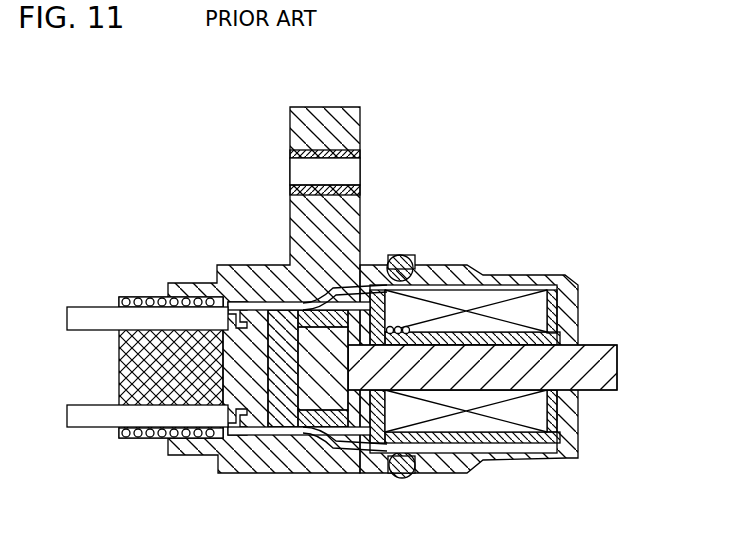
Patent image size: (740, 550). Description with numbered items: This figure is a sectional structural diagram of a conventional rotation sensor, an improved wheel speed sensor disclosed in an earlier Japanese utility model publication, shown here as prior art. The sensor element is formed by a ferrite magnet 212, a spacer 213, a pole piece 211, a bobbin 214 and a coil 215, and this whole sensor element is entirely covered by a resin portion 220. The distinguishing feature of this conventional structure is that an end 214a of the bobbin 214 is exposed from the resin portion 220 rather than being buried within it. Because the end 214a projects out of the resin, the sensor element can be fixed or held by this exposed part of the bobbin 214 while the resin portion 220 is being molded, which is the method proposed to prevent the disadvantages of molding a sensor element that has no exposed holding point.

The pole piece 211 is at (617, 366).
The ferrite magnet 212 is at (315, 382).
The spacer 213 is at (245, 308).
The bobbin 214 is at (560, 305).
The end of bobbin 214a is at (185, 283).
The coil 215 is at (527, 313).
The resin portion 220 is at (441, 265).